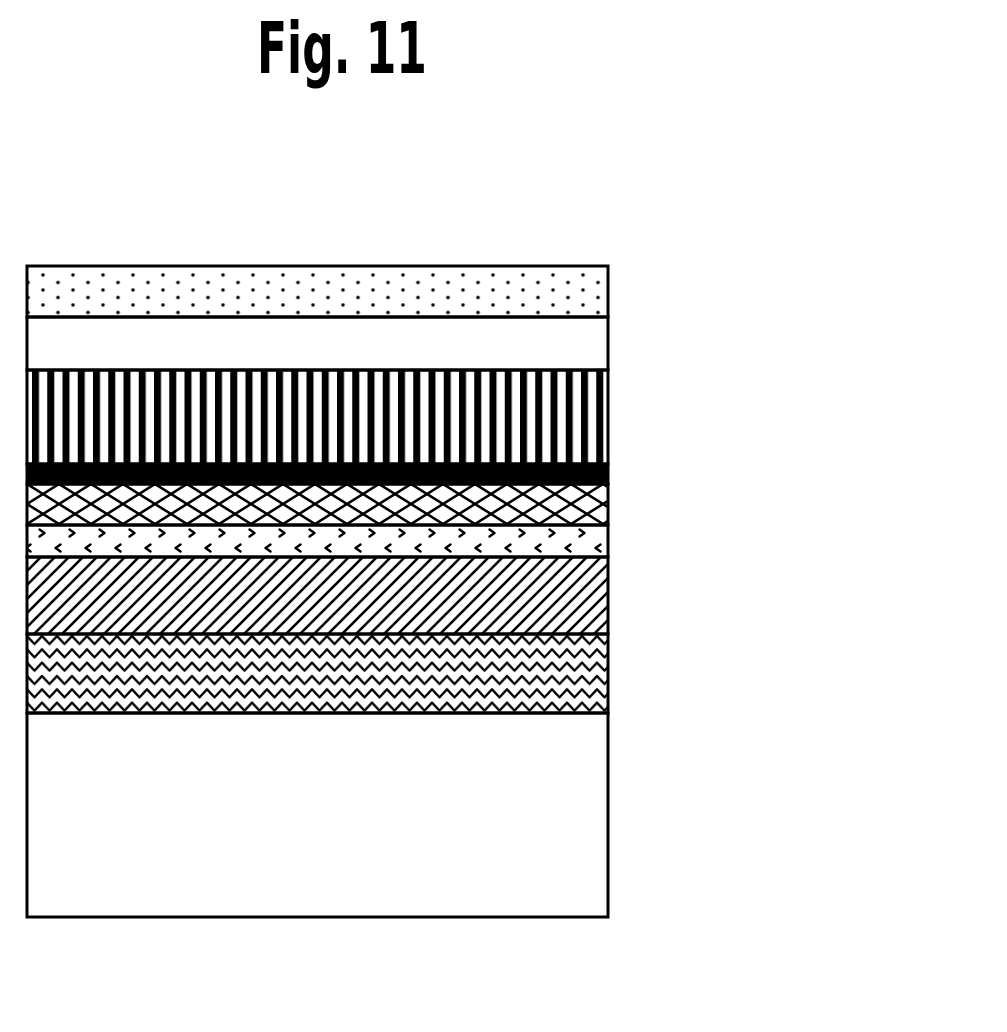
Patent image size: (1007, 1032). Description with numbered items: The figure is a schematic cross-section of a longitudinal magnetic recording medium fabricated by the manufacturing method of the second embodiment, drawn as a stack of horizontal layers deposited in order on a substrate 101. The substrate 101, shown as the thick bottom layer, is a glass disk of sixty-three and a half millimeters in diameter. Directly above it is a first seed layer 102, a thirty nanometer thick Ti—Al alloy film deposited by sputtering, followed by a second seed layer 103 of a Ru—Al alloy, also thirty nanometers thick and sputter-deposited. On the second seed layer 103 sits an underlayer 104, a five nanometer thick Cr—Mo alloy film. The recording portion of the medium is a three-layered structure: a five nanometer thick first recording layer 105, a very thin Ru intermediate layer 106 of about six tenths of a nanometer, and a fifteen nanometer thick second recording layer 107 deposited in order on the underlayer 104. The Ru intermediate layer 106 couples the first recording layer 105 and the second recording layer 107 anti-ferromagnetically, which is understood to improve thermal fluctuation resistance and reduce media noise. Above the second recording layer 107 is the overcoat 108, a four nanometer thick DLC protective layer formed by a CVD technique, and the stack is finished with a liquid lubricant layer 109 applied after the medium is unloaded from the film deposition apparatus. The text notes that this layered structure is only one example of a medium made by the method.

The substrate 101 is at (537, 822).
The first seed layer 102 is at (567, 683).
The second seed layer 103 is at (562, 590).
The underlayer 104 is at (565, 545).
The first recording layer 105 is at (610, 500).
The Ru intermediate layer 106 is at (610, 470).
The second recording layer 107 is at (615, 418).
The overcoat 108 is at (615, 343).
The liquid lubricant layer 109 is at (525, 262).